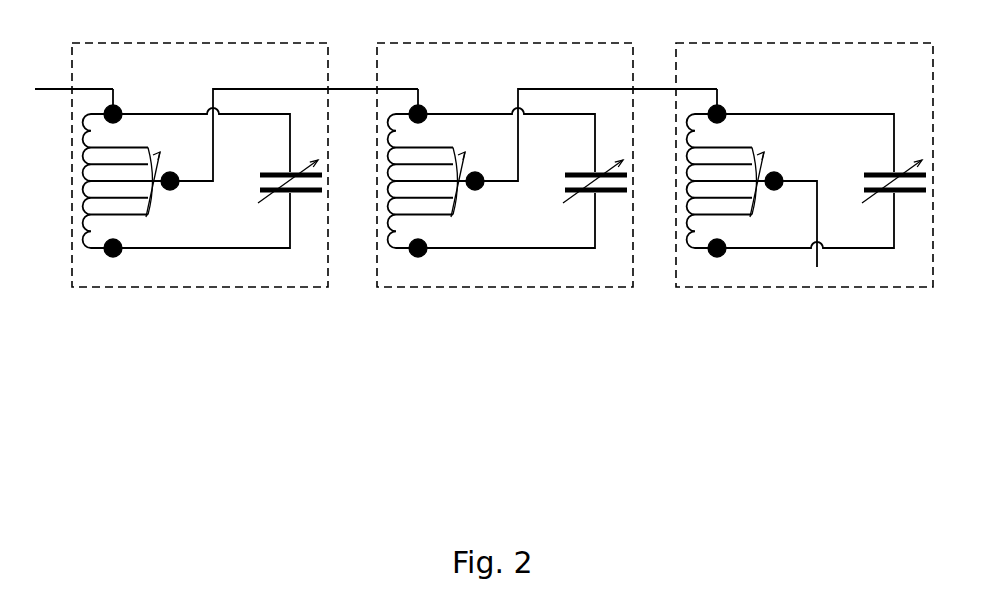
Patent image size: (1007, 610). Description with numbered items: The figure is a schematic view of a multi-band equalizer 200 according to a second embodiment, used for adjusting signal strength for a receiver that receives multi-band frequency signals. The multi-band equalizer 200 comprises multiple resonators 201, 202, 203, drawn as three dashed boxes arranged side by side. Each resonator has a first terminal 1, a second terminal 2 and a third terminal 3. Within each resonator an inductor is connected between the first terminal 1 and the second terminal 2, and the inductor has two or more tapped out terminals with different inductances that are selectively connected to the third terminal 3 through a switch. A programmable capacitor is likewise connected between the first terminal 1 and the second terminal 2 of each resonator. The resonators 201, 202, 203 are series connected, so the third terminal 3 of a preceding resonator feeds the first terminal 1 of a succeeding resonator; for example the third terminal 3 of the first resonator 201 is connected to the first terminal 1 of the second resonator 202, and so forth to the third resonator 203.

The multi-band equalizer 200 is at (307, 308).
The first resonator 201 is at (212, 78).
The second resonator 202 is at (525, 78).
The third resonator 203 is at (822, 78).
The first terminal 1 is at (423, 101).
The second terminal 2 is at (421, 263).
The third terminal 3 is at (479, 196).